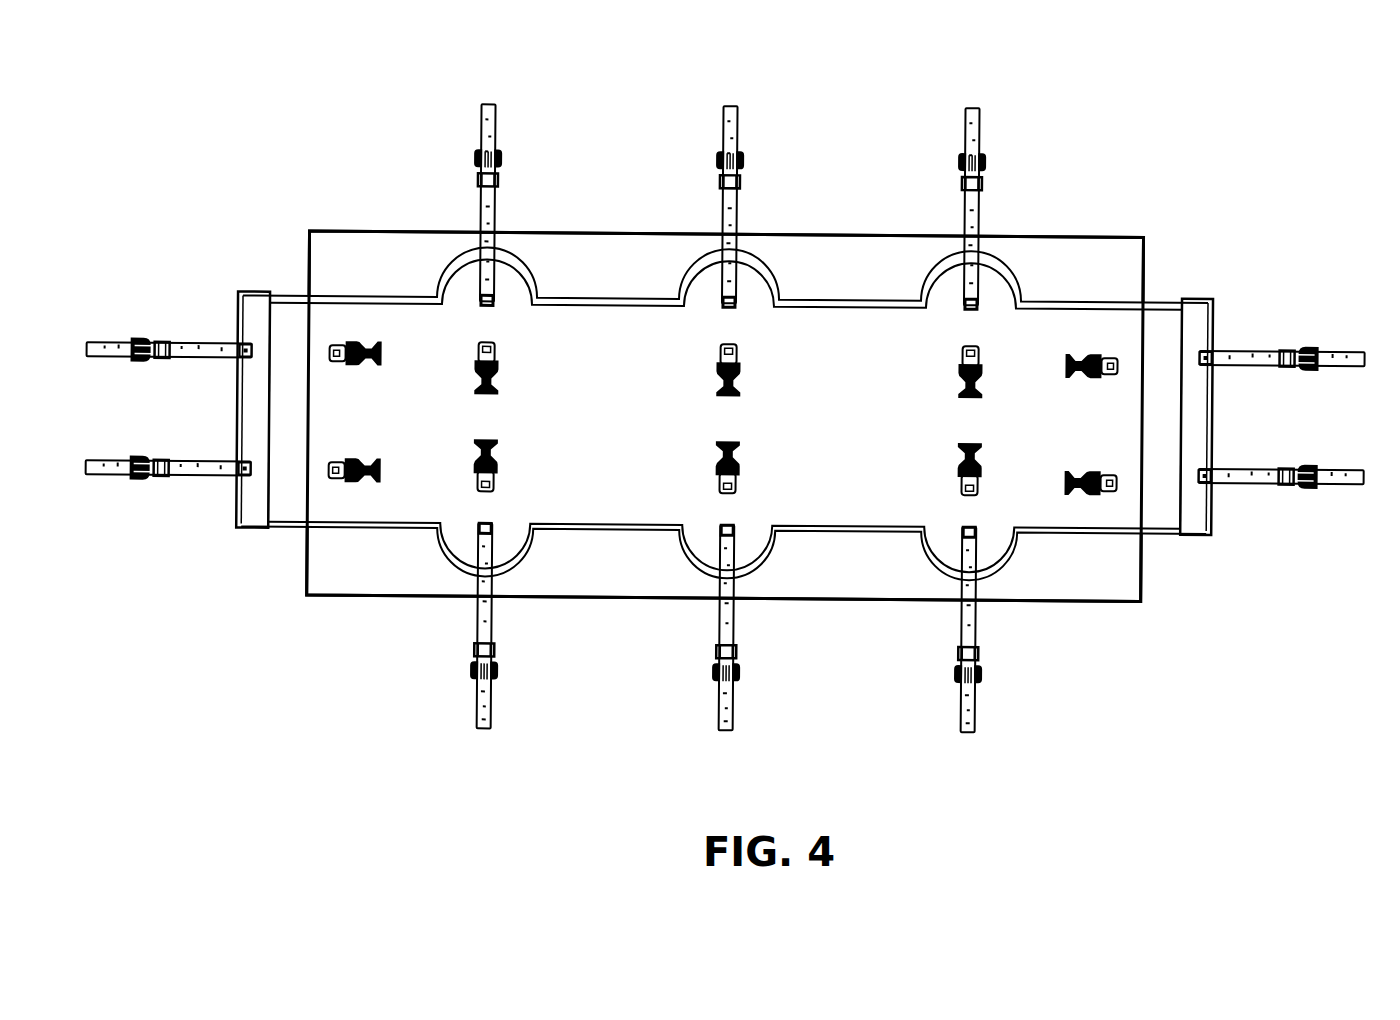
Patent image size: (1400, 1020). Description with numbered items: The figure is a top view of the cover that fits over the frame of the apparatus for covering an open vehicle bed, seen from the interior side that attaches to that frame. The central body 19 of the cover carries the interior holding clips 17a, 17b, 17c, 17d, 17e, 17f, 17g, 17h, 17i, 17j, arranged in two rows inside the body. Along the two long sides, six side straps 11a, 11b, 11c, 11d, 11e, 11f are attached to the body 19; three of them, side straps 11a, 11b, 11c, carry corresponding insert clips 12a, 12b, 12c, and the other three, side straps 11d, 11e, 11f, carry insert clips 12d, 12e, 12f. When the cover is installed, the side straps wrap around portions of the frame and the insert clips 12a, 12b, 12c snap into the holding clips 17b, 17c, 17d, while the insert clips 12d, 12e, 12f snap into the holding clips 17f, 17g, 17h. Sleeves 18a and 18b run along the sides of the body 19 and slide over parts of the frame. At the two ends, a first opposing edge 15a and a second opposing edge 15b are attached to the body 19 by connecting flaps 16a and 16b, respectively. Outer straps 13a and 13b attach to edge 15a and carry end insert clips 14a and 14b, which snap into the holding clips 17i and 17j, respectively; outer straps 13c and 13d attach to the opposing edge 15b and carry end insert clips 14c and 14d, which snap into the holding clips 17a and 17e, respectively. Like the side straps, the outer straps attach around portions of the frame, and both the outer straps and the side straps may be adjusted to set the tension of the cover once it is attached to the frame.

The side strap 11a is at (489, 103).
The side strap 11b is at (731, 105).
The side strap 11c is at (973, 107).
The side strap 11d is at (484, 728).
The side strap 11e is at (726, 728).
The side strap 11f is at (968, 728).
The insert clip 12a is at (498, 176).
The insert clip 12b is at (739, 178).
The insert clip 12c is at (980, 180).
The insert clip 12d is at (496, 654).
The insert clip 12e is at (736, 656).
The insert clip 12f is at (976, 656).
The outer strap 13a is at (1340, 472).
The outer strap 13b is at (1343, 355).
The outer strap 13c is at (106, 344).
The outer strap 13d is at (109, 462).
The end insert clip 14a is at (1287, 488).
The end insert clip 14b is at (1287, 371).
The end insert clip 14c is at (158, 360).
The end insert clip 14d is at (158, 478).
The first opposing edge 15a is at (1197, 294).
The second opposing edge 15b is at (263, 292).
The connecting flap 16a is at (1156, 522).
The connecting flap 16b is at (292, 512).
The holding clip 17a is at (368, 366).
The holding clip 17b is at (498, 374).
The holding clip 17c is at (740, 380).
The holding clip 17d is at (960, 383).
The holding clip 17e is at (368, 460).
The holding clip 17f is at (498, 455).
The holding clip 17g is at (741, 458).
The holding clip 17h is at (960, 458).
The holding clip 17i is at (1082, 466).
The holding clip 17j is at (1082, 372).
The sleeve 18a is at (372, 580).
The sleeve 18b is at (349, 250).
The body 19 is at (827, 508).